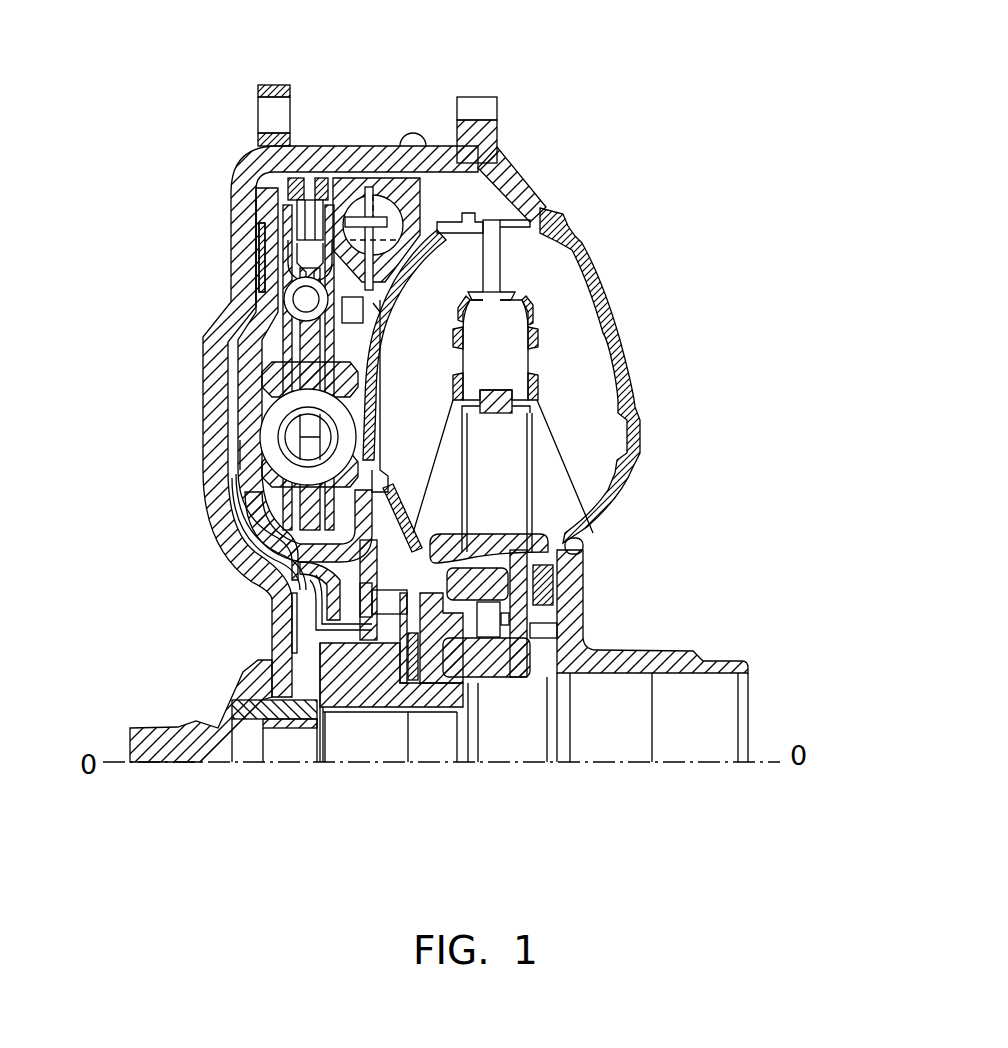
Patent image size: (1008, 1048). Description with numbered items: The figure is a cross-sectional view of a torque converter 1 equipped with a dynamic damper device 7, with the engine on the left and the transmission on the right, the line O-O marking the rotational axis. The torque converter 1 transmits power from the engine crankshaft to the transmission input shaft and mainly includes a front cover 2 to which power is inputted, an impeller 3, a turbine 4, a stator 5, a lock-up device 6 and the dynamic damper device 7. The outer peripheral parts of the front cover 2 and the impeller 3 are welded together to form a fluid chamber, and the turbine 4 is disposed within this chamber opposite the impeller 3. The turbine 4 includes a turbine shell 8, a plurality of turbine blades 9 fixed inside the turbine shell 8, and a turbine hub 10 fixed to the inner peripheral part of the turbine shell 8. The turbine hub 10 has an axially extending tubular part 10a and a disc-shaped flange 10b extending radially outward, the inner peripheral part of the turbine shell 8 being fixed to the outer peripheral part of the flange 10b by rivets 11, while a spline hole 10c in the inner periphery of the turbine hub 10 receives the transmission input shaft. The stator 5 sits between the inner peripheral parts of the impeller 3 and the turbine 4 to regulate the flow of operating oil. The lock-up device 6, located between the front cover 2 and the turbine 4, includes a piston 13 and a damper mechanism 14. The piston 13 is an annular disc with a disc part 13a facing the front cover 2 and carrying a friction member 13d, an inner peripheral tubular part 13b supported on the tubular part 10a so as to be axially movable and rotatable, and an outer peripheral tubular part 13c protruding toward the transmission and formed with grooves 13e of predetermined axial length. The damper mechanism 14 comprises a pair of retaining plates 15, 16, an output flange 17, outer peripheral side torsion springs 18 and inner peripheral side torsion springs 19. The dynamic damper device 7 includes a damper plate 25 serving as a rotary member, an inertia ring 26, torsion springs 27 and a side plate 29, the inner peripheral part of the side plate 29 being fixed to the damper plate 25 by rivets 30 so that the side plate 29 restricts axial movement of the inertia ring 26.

The torque converter 1 is at (210, 172).
The front cover 2 is at (229, 222).
The impeller 3 is at (580, 230).
The turbine 4 is at (465, 208).
The stator 5 is at (540, 470).
The lock-up device 6 is at (236, 372).
The dynamic damper device 7 is at (425, 190).
The turbine shell 8 is at (500, 222).
The turbine blades 9 is at (440, 363).
The turbine hub 10 is at (433, 715).
The tubular part 10a is at (367, 697).
The flange 10b is at (584, 546).
The spline hole 10c is at (330, 717).
The rivets 11 is at (365, 602).
The piston 13 is at (243, 428).
The disc part 13a is at (246, 453).
The inner peripheral tubular part 13b is at (355, 630).
The outer peripheral tubular part 13c is at (290, 178).
The friction member 13d is at (258, 255).
The grooves 13e is at (322, 177).
The damper mechanism 14 is at (276, 343).
The retaining plate 15 is at (283, 482).
The retaining plate 16 is at (347, 528).
The output flange 17 is at (298, 530).
The outer peripheral side torsion springs 18 is at (263, 240).
The inner peripheral side torsion springs 19 is at (292, 405).
The damper plate 25 is at (290, 205).
The inertia ring 26 is at (490, 143).
The torsion springs 27 is at (413, 133).
The side plate 29 is at (395, 282).
The rivets 30 is at (373, 303).